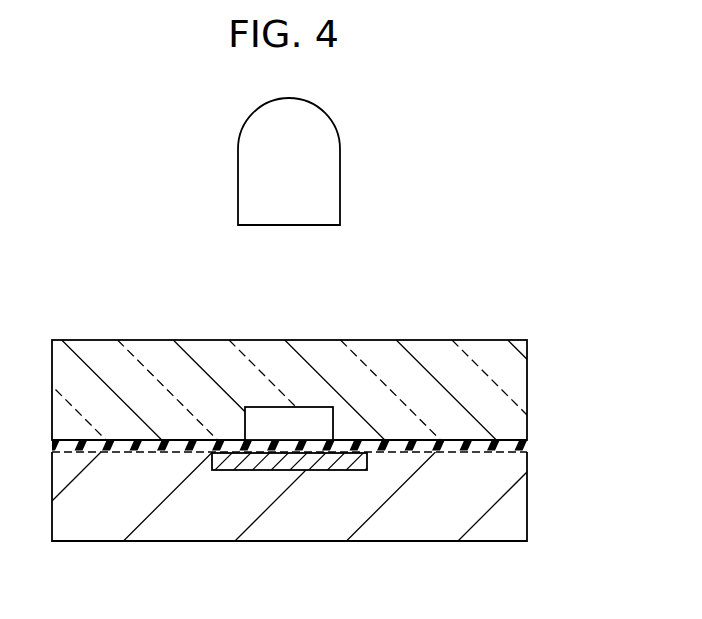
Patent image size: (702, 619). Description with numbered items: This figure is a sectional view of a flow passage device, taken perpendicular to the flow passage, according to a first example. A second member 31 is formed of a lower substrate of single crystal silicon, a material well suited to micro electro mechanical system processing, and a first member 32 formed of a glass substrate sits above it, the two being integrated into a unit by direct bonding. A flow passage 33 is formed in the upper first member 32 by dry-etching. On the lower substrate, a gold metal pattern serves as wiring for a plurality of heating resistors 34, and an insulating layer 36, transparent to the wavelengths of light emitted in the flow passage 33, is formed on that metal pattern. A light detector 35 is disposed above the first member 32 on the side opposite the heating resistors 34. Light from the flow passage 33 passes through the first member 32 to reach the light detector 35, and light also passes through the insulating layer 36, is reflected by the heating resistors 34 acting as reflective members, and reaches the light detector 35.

The second member 31 is at (487, 494).
The first member 32 is at (433, 353).
The flow passage 33 is at (246, 424).
The heating resistors 34 is at (283, 462).
The light detector 35 is at (323, 170).
The insulating layer 36 is at (478, 443).